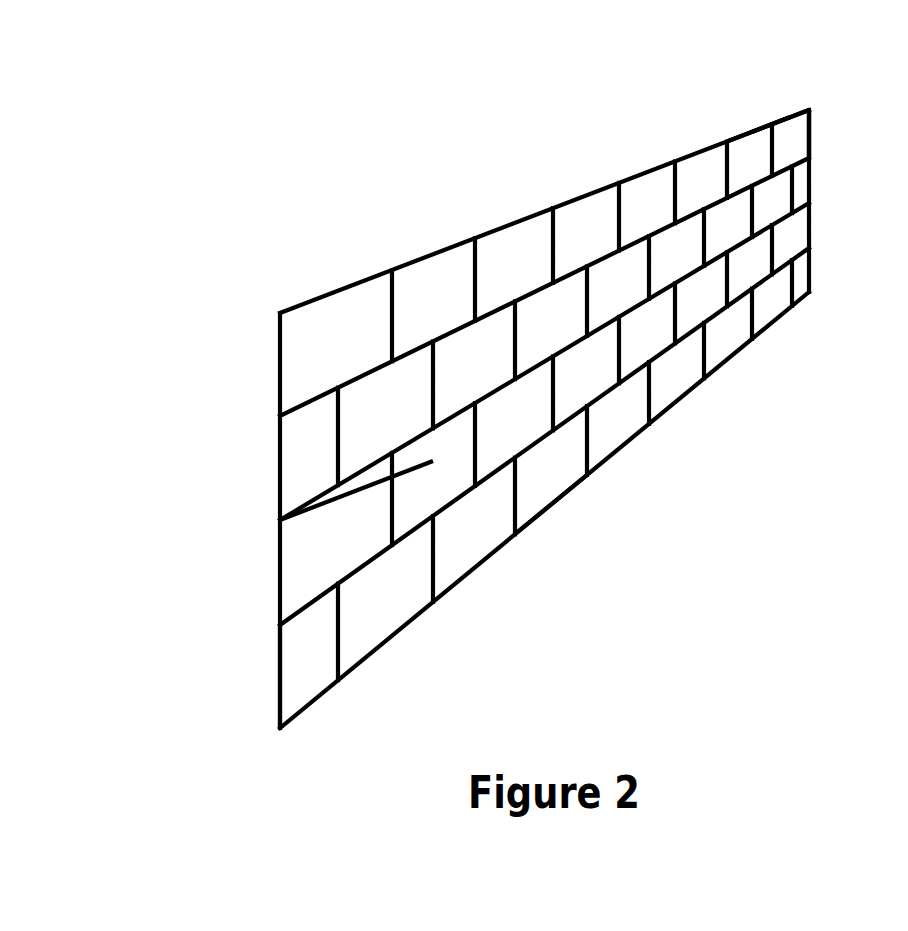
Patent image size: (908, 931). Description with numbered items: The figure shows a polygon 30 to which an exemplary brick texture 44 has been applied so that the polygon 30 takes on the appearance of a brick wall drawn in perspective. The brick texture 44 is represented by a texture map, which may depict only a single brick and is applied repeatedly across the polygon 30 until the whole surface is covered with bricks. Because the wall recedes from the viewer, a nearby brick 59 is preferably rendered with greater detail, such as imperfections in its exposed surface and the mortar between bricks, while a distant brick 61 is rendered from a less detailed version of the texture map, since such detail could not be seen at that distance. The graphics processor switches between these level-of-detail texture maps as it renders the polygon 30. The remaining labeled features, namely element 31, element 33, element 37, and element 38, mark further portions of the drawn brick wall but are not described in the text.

The polygon 30 is at (293, 130).
The shingle 31 is at (360, 470).
The upper edge 33 is at (811, 108).
The shingle joint 37 is at (771, 115).
The end edge 38 is at (809, 100).
The brick texture 44 is at (550, 485).
The brick 59 is at (298, 563).
The brick 61 is at (797, 140).